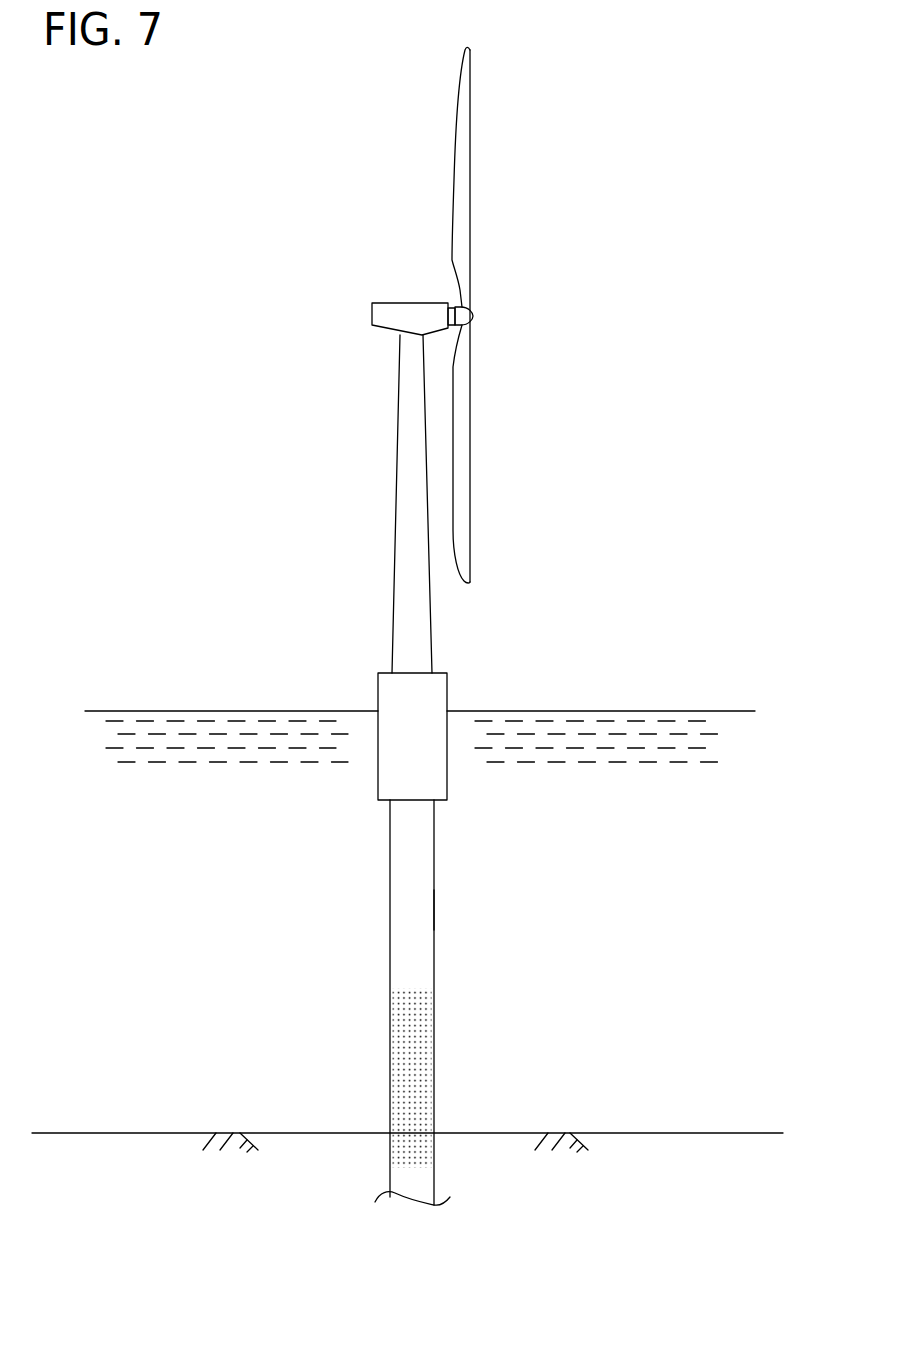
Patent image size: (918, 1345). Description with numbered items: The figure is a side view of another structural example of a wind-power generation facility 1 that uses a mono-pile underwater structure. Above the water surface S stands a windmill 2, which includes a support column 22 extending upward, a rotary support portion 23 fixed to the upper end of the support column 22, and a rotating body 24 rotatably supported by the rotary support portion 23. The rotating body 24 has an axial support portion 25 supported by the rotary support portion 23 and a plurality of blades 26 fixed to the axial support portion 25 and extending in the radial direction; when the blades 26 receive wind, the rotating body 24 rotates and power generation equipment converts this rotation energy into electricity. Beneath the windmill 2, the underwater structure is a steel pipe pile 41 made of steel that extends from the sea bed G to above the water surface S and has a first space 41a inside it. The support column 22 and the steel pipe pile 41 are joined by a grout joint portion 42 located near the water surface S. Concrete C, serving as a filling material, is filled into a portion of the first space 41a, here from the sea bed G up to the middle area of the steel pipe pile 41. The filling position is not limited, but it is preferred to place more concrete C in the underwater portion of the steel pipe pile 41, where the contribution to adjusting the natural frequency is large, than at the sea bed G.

The wind-power generation facility 1 is at (704, 162).
The windmill 2 is at (324, 299).
The support column 22 is at (397, 485).
The rotary support portion 23 is at (392, 303).
The rotating body 24 is at (607, 264).
The axial support portion 25 is at (473, 316).
The blade 26 is at (470, 196).
The steel pipe pile 41 is at (390, 998).
The first space 41a is at (434, 903).
The grout joint portion 42 is at (378, 777).
The concrete C is at (423, 1073).
The water surface S is at (683, 711).
The sea bed G is at (713, 1133).